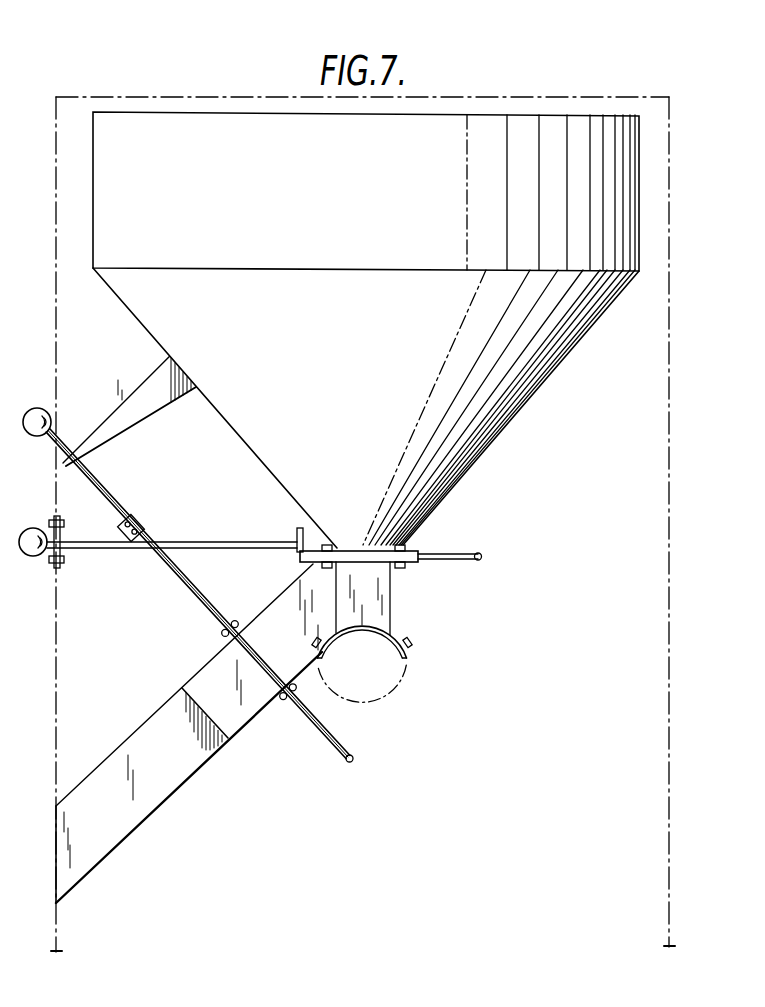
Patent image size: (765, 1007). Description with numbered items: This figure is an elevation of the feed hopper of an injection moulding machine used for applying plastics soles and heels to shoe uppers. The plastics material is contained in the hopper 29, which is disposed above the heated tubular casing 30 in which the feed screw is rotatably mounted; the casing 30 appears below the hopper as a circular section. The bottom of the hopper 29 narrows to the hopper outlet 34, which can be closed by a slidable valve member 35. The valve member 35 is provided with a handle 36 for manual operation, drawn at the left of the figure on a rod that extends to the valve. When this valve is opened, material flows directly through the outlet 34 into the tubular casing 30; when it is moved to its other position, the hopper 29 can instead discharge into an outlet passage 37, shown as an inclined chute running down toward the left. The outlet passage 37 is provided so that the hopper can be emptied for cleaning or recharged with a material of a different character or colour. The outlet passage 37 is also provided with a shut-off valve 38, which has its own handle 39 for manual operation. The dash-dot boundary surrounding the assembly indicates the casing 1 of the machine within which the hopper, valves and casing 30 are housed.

The casing 1 is at (58, 358).
The hopper 29 is at (368, 199).
The heated tubular casing 30 is at (404, 692).
The hopper outlet 34 is at (370, 603).
The slidable valve member 35 is at (428, 560).
The handle 36 is at (34, 556).
The outlet passage 37 is at (212, 678).
The shut-off valve 38 is at (318, 727).
The handle 39 is at (47, 412).